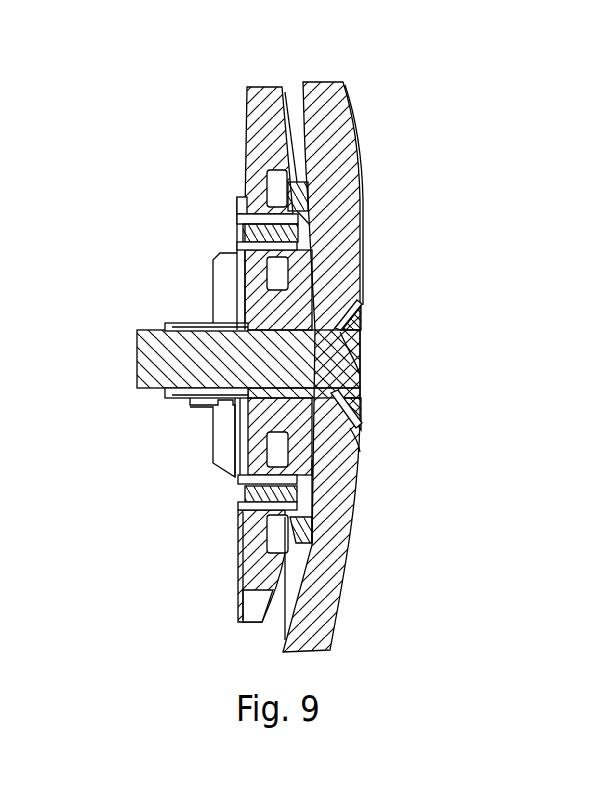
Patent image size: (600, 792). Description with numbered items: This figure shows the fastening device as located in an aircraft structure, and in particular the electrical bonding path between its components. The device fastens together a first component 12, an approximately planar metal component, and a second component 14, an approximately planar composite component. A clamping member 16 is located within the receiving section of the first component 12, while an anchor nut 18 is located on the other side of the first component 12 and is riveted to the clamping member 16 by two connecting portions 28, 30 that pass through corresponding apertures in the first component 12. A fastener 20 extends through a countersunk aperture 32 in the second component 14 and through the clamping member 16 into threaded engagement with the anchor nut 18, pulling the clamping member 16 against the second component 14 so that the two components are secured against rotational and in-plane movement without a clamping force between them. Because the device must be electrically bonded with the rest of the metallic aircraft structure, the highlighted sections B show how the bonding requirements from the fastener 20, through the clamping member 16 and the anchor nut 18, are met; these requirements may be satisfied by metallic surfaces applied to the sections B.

The first component 12 is at (270, 88).
The second component 14 is at (337, 88).
The clamping member 16 is at (318, 278).
The anchor nut 18 is at (220, 425).
The fastener 20 is at (360, 327).
The connecting portion 28 is at (238, 208).
The connecting portion 30 is at (243, 478).
The countersunk aperture 32 is at (360, 447).
The section B is at (238, 248).